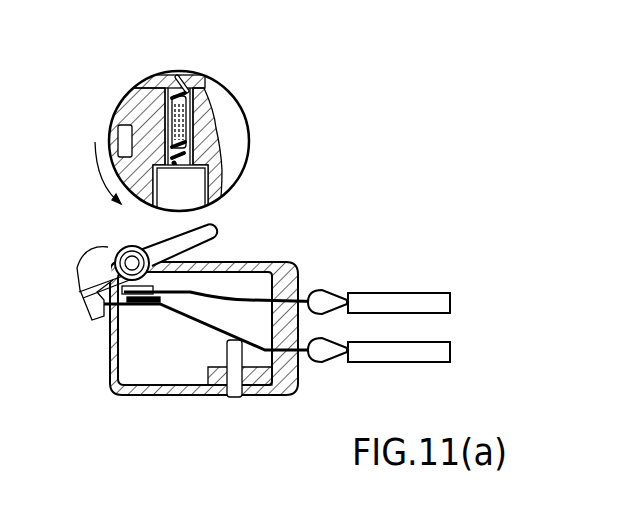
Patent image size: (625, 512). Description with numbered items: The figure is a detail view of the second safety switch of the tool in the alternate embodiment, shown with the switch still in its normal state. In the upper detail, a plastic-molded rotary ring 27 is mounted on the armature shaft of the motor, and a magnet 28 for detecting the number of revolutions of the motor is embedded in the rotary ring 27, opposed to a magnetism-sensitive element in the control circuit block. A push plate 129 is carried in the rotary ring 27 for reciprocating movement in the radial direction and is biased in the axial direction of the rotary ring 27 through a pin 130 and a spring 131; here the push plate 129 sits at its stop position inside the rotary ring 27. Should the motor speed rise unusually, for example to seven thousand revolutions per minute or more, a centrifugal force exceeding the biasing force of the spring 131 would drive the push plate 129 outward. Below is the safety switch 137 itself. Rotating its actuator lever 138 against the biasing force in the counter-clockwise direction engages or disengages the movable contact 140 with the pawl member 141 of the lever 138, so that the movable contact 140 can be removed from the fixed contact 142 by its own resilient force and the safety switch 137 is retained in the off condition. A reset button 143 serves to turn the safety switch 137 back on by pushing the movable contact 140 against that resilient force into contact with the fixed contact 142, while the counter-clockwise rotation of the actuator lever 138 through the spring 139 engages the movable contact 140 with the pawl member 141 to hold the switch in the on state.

The rotary ring 27 is at (228, 103).
The magnet 28 is at (116, 128).
The push plate 129 is at (197, 180).
The pin 130 is at (157, 72).
The spring 131 is at (183, 132).
The safety switch 137 is at (347, 265).
The actuator lever 138 is at (207, 225).
The spring 139 is at (127, 250).
The movable contact 140 is at (163, 307).
The pawl member 141 is at (100, 327).
The fixed contact 142 is at (198, 297).
The reset button 143 is at (233, 388).